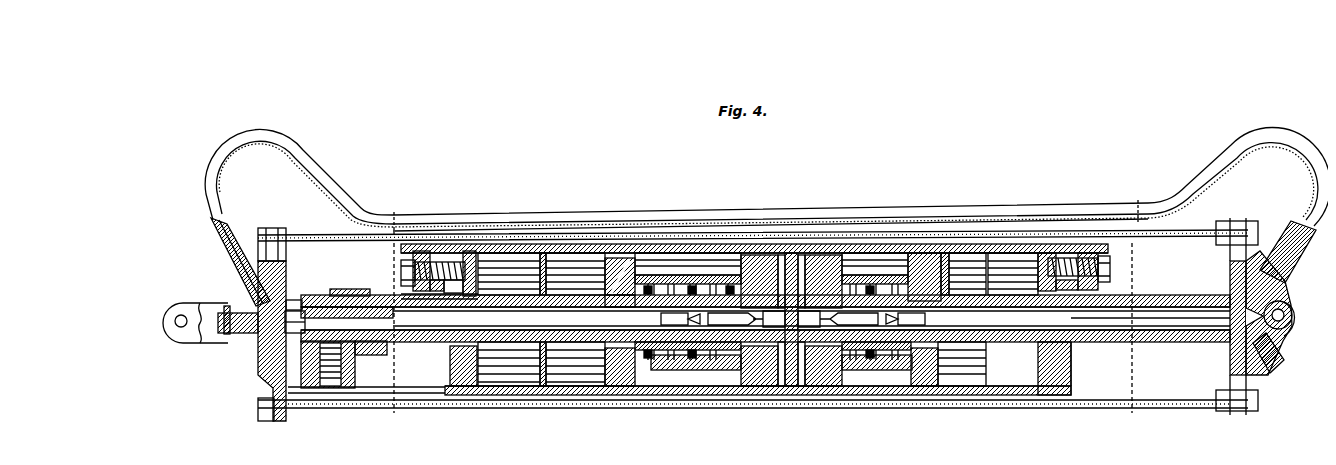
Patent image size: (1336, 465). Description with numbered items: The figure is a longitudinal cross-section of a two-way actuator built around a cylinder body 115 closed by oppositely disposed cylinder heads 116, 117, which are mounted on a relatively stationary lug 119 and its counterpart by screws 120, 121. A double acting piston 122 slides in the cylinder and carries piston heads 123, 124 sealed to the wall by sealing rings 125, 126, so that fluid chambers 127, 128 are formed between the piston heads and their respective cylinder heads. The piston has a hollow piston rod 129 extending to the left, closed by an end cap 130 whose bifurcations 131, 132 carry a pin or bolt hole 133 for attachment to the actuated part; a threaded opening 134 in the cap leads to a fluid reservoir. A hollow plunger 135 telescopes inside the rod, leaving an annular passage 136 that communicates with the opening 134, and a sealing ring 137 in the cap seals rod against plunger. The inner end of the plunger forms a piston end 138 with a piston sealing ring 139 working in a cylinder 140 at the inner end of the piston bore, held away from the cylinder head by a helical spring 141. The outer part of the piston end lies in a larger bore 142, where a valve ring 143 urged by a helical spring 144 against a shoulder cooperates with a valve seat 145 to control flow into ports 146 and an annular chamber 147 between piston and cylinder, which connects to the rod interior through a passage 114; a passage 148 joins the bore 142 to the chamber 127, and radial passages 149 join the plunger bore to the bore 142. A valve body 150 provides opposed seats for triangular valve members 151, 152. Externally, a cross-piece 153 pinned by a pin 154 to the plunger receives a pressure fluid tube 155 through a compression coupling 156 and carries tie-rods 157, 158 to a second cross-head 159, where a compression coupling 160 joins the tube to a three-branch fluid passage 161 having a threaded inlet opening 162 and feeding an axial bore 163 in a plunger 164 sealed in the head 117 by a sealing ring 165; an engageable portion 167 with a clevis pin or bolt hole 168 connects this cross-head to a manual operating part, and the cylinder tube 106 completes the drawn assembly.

The cylinder tube 106 is at (440, 380).
The passage 114 is at (606, 250).
The cylinder body 115 is at (490, 243).
The cylinder head 116 is at (462, 243).
The cylinder head 117 is at (1036, 247).
The stationary lug 119 is at (1058, 250).
The screw 120 is at (428, 252).
The screw 121 is at (1080, 245).
The double acting piston 122 is at (782, 245).
The piston head 123 is at (552, 268).
The piston head 124 is at (962, 247).
The sealing ring 125 is at (582, 268).
The sealing ring 126 is at (937, 245).
The fluid chamber 127 is at (520, 247).
The fluid chamber 128 is at (995, 247).
The hollow piston rod 129 is at (530, 375).
The end cap 130 is at (340, 282).
The bifurcation 131 is at (178, 336).
The bifurcation 132 is at (288, 291).
The pin or bolt hole 133 is at (174, 306).
The threaded opening 134 is at (326, 382).
The hollow plunger 135 is at (416, 336).
The annular passage 136 is at (375, 349).
The sealing ring 137 is at (310, 290).
The piston end 138 is at (695, 362).
The piston sealing ring 139 is at (745, 378).
The cylinder 140 is at (772, 380).
The helical spring 141 is at (780, 300).
The larger bore 142 is at (612, 362).
The valve ring 143 is at (675, 365).
The helical spring 144 is at (665, 247).
The valve seat 145 is at (672, 355).
The port 146 is at (740, 249).
The annular chamber 147 is at (690, 267).
The passage 148 is at (525, 360).
The radial passage 149 is at (625, 368).
The valve body 150 is at (592, 345).
The valve member 151 is at (632, 252).
The valve member 152 is at (772, 247).
The cross-piece 153 is at (256, 370).
The pin 154 is at (218, 297).
The pressure fluid tube 155 is at (246, 122).
The compression coupling 156 is at (220, 232).
The tie-rod 157 is at (298, 226).
The tie-rod 158 is at (310, 387).
The second cross-head 159 is at (1222, 358).
The compression coupling 160 is at (1288, 220).
The three-branch fluid passage 161 is at (1235, 285).
The threaded inlet opening 162 is at (1274, 358).
The axial bore 163 is at (1088, 322).
The plunger 164 is at (1140, 402).
The sealing ring 165 is at (1060, 380).
The engageable portion 167 is at (1284, 324).
The clevis pin or bolt hole 168 is at (1278, 302).